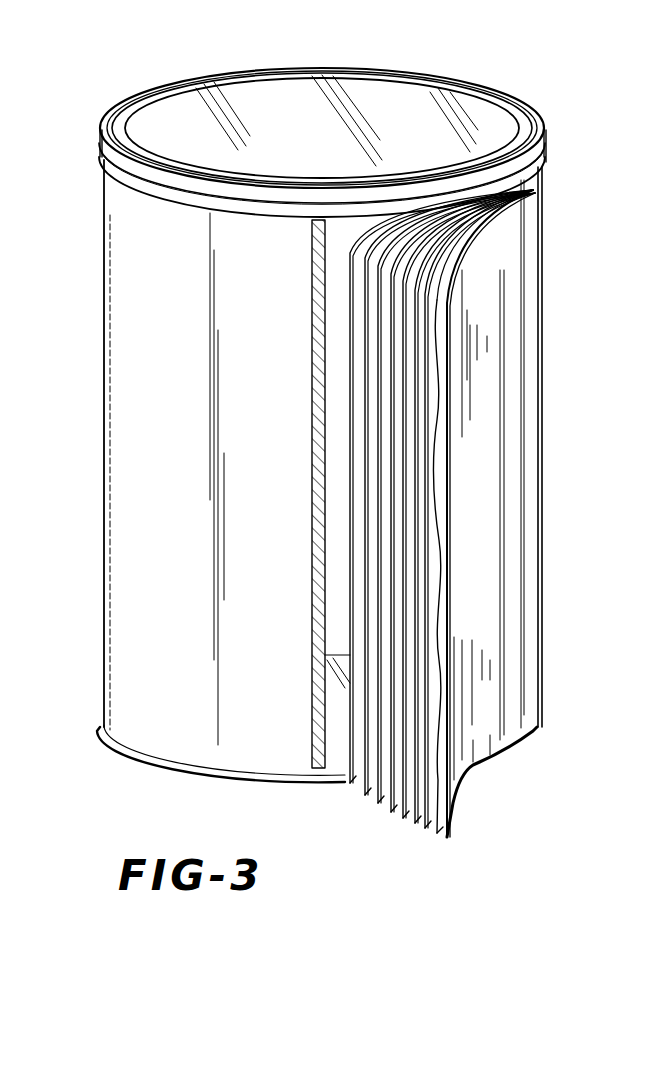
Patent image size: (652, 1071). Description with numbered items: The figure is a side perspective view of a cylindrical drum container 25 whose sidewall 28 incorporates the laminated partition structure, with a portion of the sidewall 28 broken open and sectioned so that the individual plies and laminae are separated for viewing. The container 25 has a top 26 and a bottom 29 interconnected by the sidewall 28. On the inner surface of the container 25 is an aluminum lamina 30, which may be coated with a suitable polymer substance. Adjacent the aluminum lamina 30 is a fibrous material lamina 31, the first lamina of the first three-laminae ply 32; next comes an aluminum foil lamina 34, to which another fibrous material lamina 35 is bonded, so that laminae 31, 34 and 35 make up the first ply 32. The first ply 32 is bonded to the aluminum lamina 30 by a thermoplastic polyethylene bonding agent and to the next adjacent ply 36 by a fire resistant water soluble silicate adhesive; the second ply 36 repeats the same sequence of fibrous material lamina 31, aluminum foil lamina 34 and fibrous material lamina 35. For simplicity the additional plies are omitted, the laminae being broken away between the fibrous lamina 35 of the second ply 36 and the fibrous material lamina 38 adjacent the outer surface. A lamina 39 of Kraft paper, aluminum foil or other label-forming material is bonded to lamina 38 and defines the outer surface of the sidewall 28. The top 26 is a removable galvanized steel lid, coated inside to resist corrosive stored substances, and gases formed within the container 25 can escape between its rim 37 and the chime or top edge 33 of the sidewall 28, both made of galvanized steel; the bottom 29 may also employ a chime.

The cylindrical drum container 25 is at (156, 90).
The top 26 is at (407, 98).
The rim 37 is at (540, 127).
The chime 33 is at (541, 170).
The sidewall 28 is at (480, 247).
The bottom 29 is at (125, 747).
The aluminum lamina 30 is at (350, 541).
The fibrous material lamina 31 is at (400, 315).
The aluminum foil lamina 34 is at (413, 343).
The fibrous material lamina 35 is at (423, 380).
The lamina 39 is at (450, 584).
The first ply 32 is at (363, 797).
The second ply 36 is at (425, 824).
The fibrous material lamina 38 is at (437, 840).